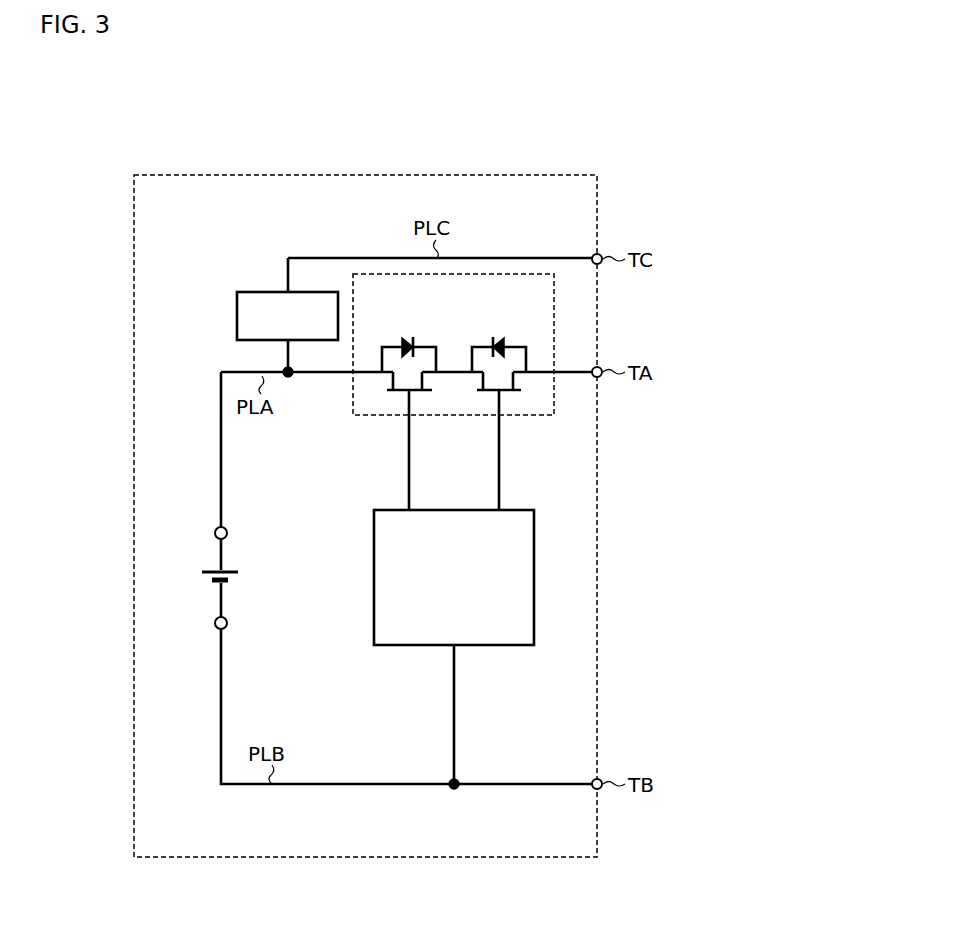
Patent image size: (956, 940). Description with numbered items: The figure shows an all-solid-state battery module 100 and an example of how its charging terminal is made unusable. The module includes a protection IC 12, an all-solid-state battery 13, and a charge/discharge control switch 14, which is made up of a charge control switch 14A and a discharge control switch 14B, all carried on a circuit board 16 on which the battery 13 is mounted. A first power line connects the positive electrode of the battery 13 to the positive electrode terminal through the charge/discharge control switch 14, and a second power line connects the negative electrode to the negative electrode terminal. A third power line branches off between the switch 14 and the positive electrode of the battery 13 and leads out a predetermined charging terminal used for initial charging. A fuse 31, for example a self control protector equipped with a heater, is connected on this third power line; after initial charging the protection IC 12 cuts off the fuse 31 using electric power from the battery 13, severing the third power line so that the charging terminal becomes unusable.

The all-solid-state battery module 100 is at (562, 487).
The circuit board 16 is at (516, 175).
The fuse 31 is at (252, 292).
The charge/discharge control switch 14 is at (365, 416).
The charge control switch 14A is at (409, 323).
The discharge control switch 14B is at (498, 323).
The protection IC 12 is at (536, 564).
The all-solid-state battery 13 is at (213, 572).